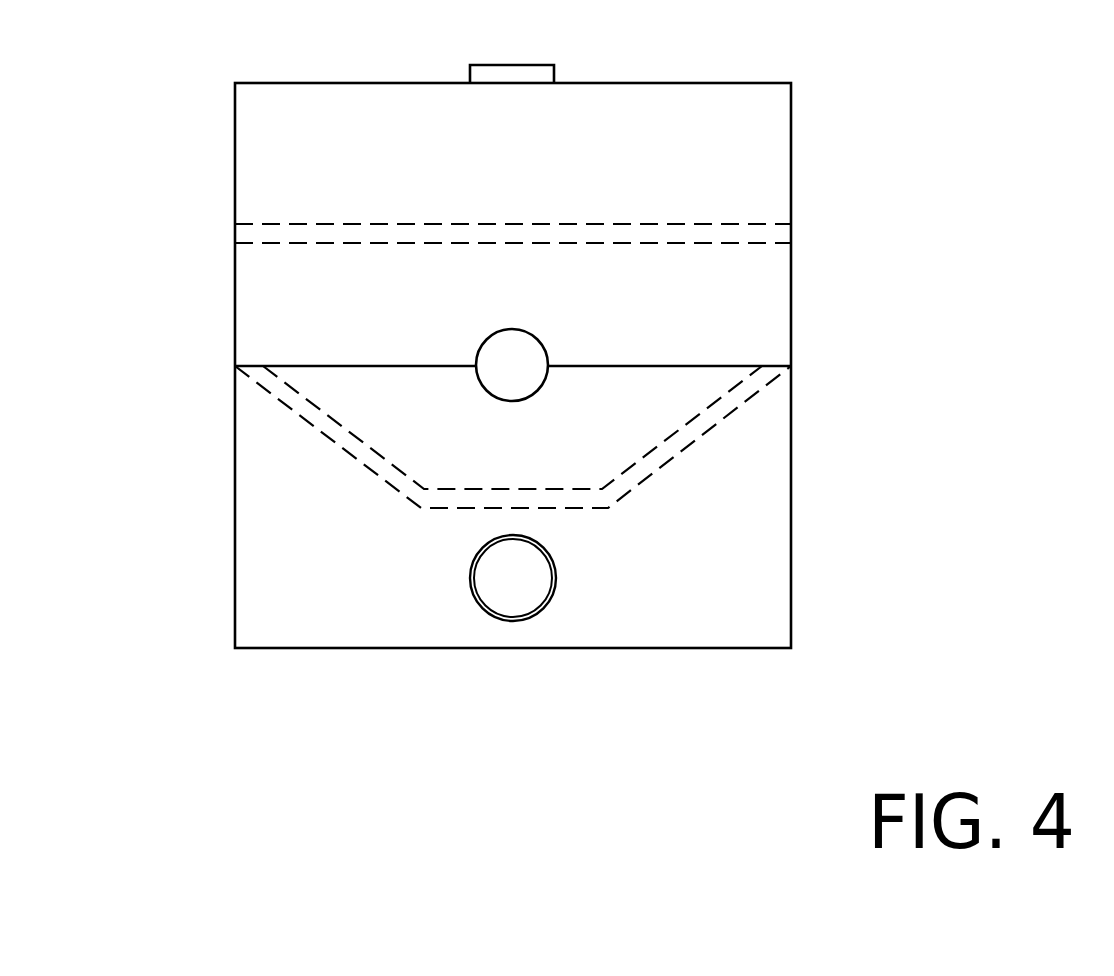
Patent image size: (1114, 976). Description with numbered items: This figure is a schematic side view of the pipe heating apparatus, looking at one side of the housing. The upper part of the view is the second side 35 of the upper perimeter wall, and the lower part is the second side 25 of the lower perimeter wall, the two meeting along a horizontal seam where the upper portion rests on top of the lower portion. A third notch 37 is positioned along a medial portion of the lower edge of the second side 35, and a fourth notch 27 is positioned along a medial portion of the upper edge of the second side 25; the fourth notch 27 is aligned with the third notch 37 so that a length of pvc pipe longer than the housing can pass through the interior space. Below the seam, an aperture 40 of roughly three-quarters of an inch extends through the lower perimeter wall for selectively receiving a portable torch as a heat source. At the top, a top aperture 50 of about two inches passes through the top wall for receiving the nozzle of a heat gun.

The second side of the lower perimeter wall 25 is at (648, 632).
The second side of the upper perimeter wall 35 is at (257, 299).
The top aperture 50 is at (596, 46).
The third notch 37 is at (691, 343).
The fourth notch 27 is at (571, 437).
The aperture 40 is at (557, 578).